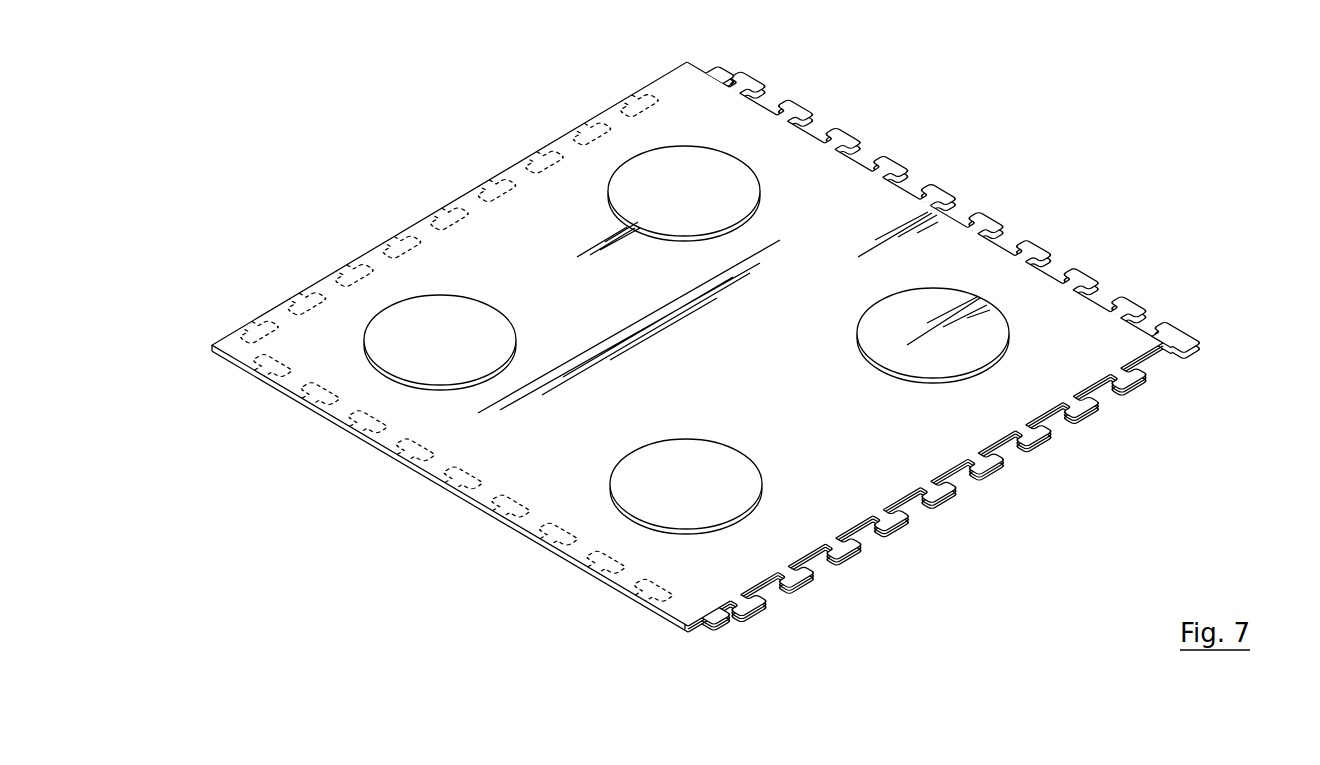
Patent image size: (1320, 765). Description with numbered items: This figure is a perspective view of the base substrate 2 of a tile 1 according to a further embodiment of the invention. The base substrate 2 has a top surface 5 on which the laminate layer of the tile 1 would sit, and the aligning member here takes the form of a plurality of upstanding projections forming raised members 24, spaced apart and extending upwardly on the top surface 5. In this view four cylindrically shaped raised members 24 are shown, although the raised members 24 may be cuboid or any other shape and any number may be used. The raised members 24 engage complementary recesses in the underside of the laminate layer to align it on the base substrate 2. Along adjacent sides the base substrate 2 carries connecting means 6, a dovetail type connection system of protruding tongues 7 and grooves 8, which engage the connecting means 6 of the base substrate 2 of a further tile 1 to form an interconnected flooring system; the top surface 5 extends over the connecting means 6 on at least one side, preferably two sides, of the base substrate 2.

The tile 1 is at (857, 70).
The base substrate 2 is at (560, 213).
The top surface 5 is at (726, 362).
The connecting means 6 is at (1097, 433).
The protruding tongues 7 is at (1027, 445).
The grooves 8 is at (985, 467).
The raised members 24 is at (678, 203).